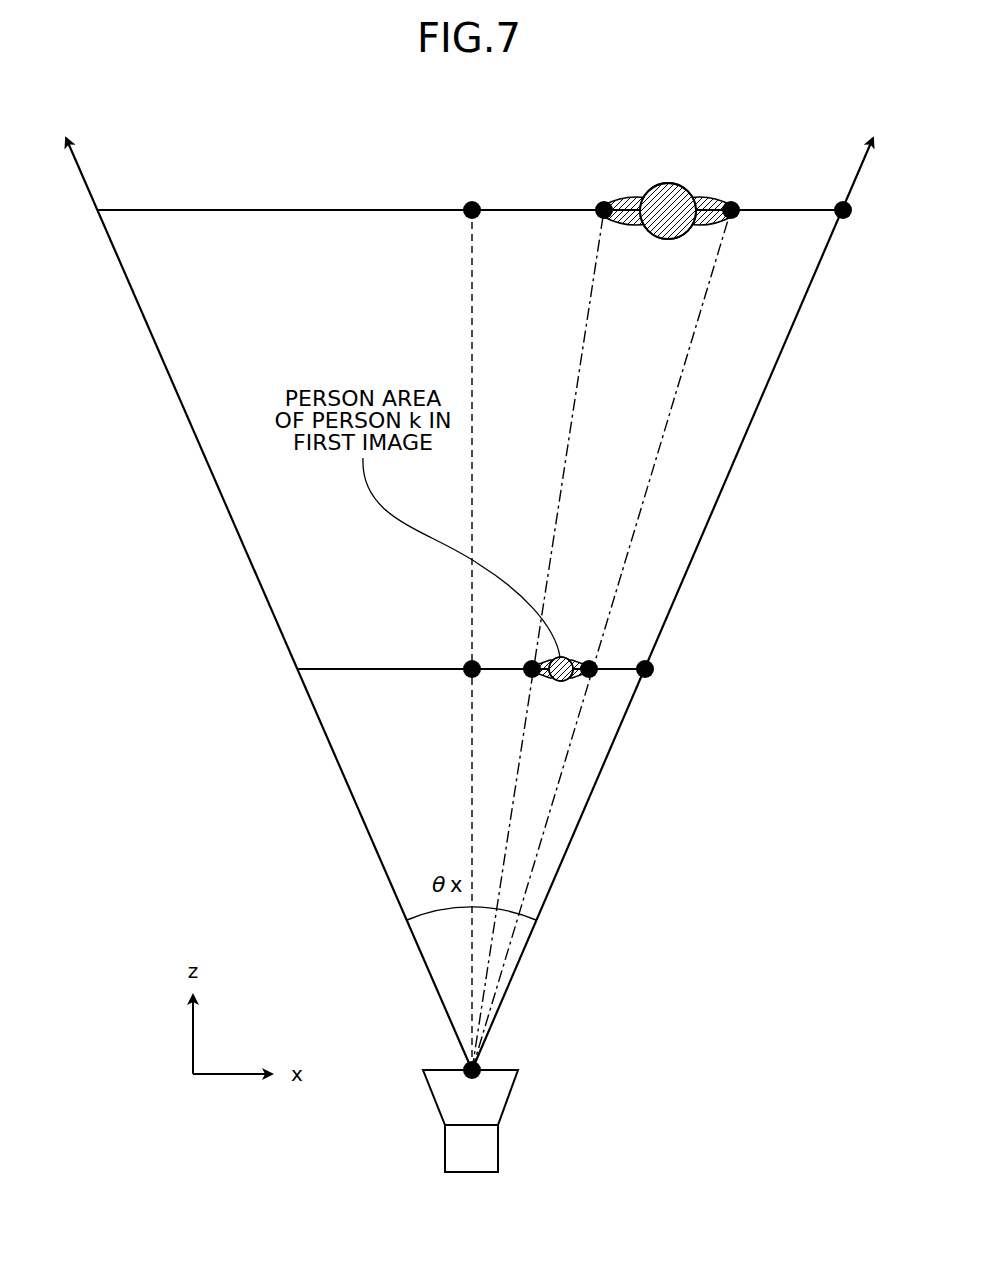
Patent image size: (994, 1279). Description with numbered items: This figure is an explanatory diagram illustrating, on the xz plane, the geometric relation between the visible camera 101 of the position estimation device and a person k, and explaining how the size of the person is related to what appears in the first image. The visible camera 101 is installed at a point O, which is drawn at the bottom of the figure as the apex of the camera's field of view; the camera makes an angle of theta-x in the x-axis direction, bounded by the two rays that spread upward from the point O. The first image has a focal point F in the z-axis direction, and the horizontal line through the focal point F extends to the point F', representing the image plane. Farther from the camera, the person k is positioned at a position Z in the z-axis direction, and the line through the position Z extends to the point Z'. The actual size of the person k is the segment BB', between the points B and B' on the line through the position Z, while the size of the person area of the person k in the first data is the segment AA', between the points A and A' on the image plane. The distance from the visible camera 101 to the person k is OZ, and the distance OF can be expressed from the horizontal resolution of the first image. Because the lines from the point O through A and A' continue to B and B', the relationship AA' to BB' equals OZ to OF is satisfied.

The visible camera 101 is at (495, 1098).
The person k is at (668, 183).
The point O is at (461, 1060).
The position Z is at (462, 197).
The point B is at (596, 197).
The point B' is at (742, 197).
The point Z' is at (841, 197).
The focal point F is at (463, 657).
The point A is at (525, 657).
The point A' is at (584, 657).
The point F' is at (642, 657).